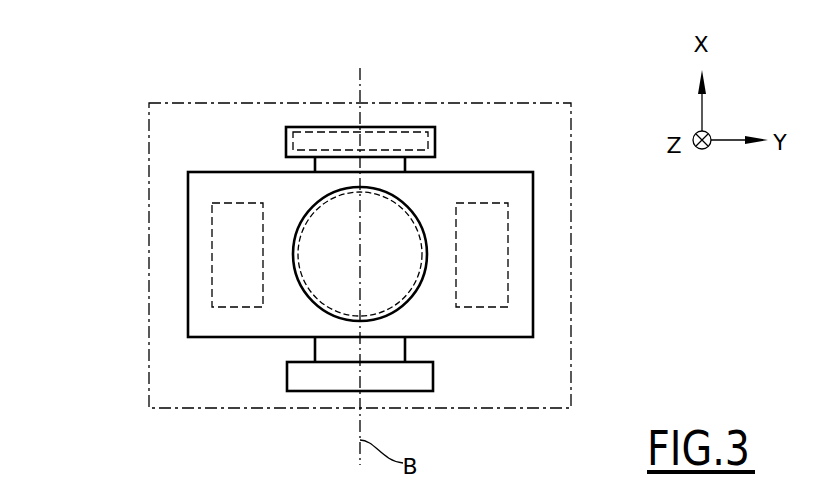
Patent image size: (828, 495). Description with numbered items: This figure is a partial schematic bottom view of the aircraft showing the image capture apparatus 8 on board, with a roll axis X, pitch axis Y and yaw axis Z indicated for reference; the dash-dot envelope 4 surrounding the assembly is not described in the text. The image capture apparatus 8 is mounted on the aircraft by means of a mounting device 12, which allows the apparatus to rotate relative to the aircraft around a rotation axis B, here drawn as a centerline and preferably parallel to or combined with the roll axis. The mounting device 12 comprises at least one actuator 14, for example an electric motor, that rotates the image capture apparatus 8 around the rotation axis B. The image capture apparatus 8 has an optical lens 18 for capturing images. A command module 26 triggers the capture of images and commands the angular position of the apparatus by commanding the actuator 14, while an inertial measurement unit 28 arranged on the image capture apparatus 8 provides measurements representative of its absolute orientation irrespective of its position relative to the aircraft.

The vehicle structure envelope 4 is at (149, 302).
The image capture apparatus 8 is at (548, 211).
The mounting device 12 is at (428, 122).
The actuator 14 is at (432, 145).
The optical lens 18 is at (323, 280).
The command module 26 is at (508, 283).
The inertial measurement unit 28 is at (212, 240).